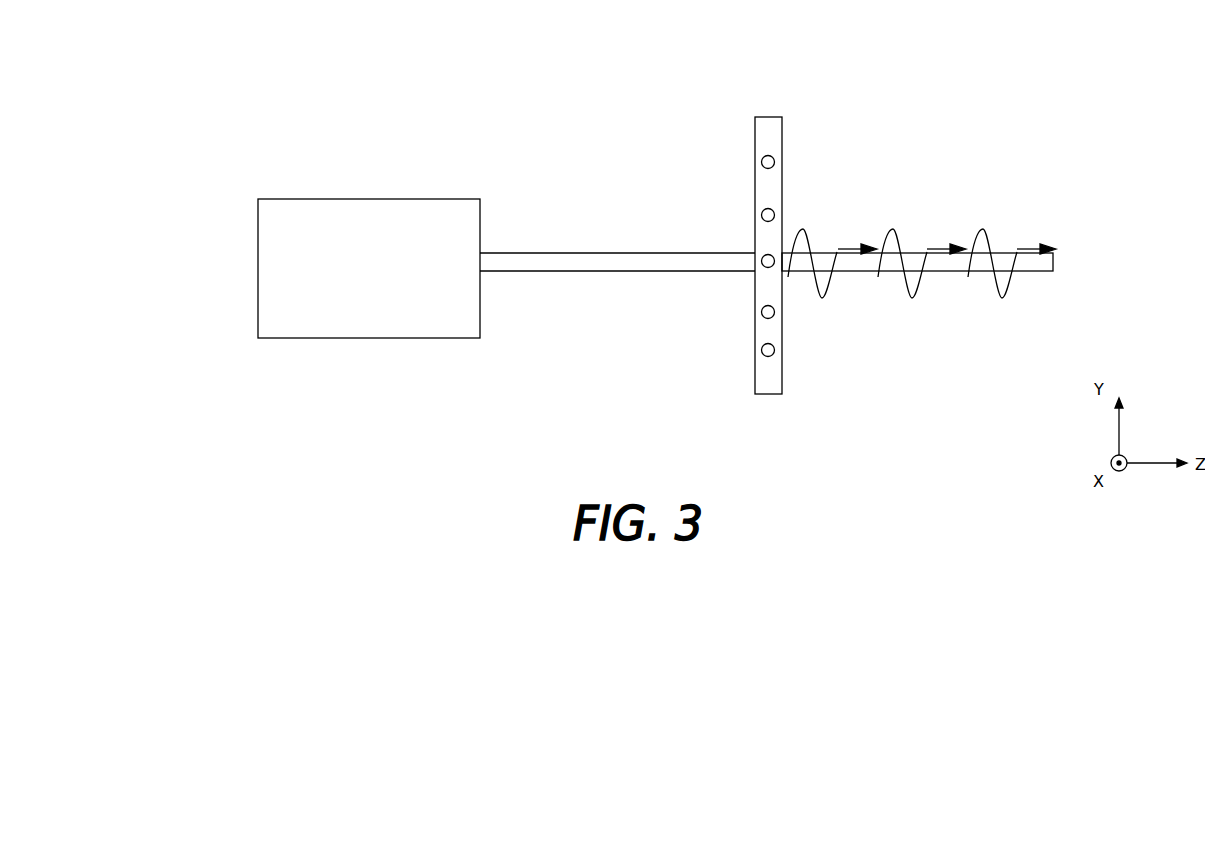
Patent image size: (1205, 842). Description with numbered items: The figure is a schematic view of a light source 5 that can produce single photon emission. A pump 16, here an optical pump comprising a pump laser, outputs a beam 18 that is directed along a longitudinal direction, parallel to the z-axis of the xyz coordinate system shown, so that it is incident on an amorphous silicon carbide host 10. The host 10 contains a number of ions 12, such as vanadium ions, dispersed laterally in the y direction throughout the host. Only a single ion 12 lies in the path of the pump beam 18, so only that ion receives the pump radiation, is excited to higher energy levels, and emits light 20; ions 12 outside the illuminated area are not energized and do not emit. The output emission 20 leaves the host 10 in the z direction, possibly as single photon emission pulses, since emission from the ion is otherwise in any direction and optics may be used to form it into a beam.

The light source 5 is at (244, 90).
The amorphous silicon carbide host 10 is at (767, 196).
The ion 12 is at (769, 267).
The pump 16 is at (367, 317).
The pump beam 18 is at (638, 261).
The output emission 20 is at (890, 222).